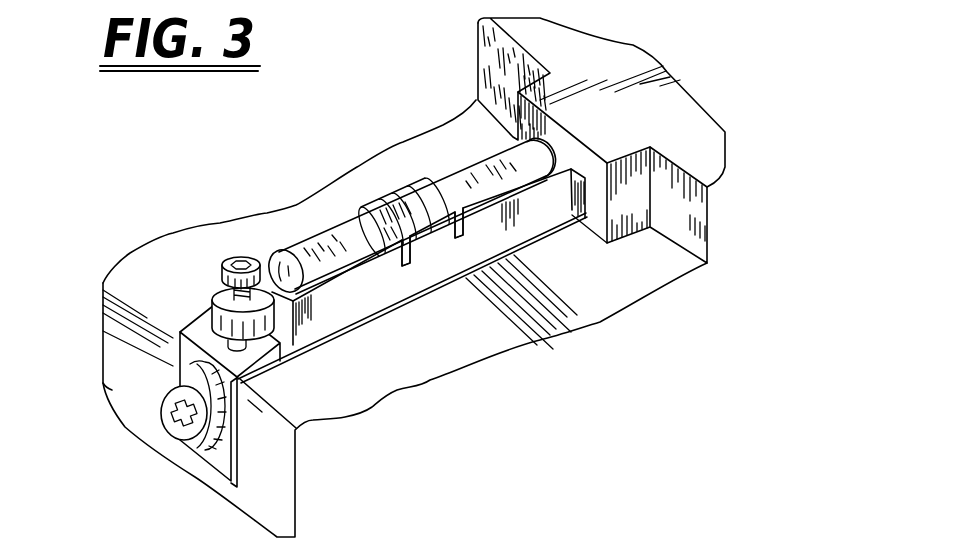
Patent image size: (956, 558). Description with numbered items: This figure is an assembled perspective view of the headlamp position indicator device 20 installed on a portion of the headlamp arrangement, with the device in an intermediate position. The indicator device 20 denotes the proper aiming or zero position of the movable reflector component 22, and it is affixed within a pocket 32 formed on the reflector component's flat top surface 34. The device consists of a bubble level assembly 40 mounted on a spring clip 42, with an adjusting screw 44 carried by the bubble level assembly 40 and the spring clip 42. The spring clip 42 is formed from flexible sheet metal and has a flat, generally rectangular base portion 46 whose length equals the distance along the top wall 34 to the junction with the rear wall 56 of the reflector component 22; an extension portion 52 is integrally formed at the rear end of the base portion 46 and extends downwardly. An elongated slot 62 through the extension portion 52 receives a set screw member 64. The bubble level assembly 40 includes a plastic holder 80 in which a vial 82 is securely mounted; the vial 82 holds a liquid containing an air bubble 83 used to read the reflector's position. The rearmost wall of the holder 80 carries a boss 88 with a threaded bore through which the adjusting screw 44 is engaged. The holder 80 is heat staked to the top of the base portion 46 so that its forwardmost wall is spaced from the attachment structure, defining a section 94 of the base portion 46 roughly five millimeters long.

The headlamp position indicator device 20 is at (280, 229).
The movable reflector component 22 is at (590, 318).
The pocket 32 is at (599, 127).
The flat top surface 34 is at (467, 370).
The bubble level assembly 40 is at (450, 188).
The spring clip 42 is at (318, 348).
The adjusting screw 44 is at (224, 283).
The base portion 46 is at (373, 317).
The extension portion 52 is at (222, 458).
The rear wall 56 is at (278, 504).
The elongated slot 62 is at (190, 372).
The set screw member 64 is at (164, 417).
The plastic holder 80 is at (544, 218).
The vial 82 is at (326, 238).
The air bubble 83 is at (382, 200).
The boss 88 is at (224, 322).
The section 94 is at (585, 216).